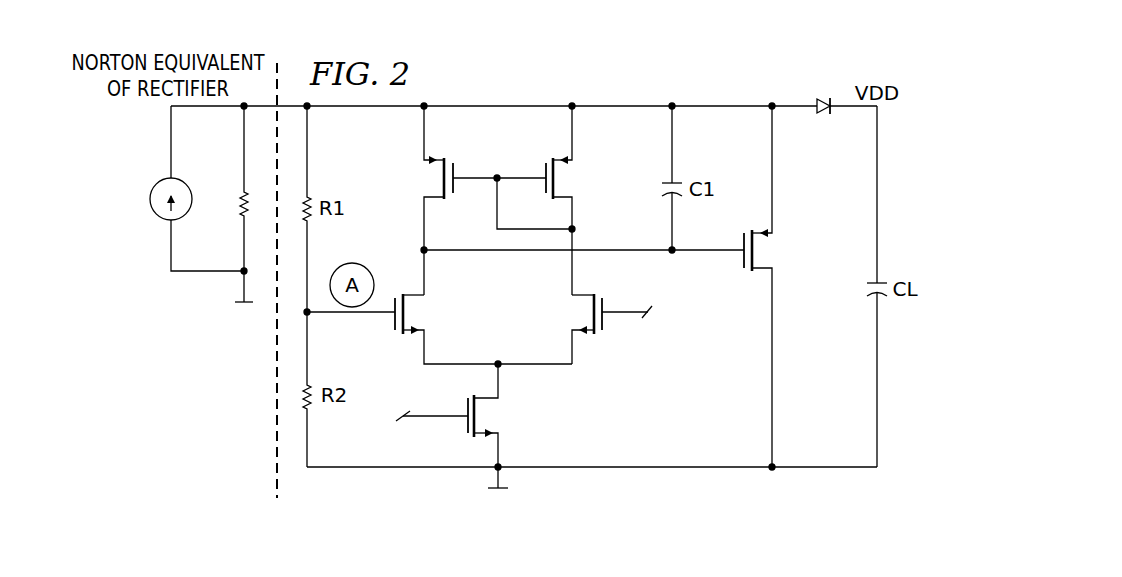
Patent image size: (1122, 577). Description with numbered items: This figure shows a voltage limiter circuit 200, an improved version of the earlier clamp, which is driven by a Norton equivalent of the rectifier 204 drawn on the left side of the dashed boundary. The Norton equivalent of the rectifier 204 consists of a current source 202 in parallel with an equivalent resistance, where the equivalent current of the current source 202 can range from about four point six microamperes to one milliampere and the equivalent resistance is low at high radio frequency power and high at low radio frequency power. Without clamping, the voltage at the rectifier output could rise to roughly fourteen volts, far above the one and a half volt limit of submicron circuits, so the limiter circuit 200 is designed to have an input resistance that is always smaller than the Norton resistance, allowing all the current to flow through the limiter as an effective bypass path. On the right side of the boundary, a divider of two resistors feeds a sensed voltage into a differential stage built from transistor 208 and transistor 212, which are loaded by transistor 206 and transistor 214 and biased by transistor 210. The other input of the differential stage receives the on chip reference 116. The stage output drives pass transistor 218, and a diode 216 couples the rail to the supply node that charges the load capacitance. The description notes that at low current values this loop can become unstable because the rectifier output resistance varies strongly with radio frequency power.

The power supply circuit 200 is at (187, 405).
The current source 202 is at (158, 216).
The Norton equivalent of the rectifier 204 is at (215, 337).
The PMOS transistor 206 is at (459, 160).
The NMOS transistor 208 is at (392, 326).
The NMOS bias transistor 210 is at (403, 416).
The NMOS transistor 212 is at (607, 302).
The PMOS transistor 214 is at (539, 162).
The diode 216 is at (826, 100).
The PMOS pass transistor 218 is at (741, 258).
The on chip reference 116 is at (651, 320).